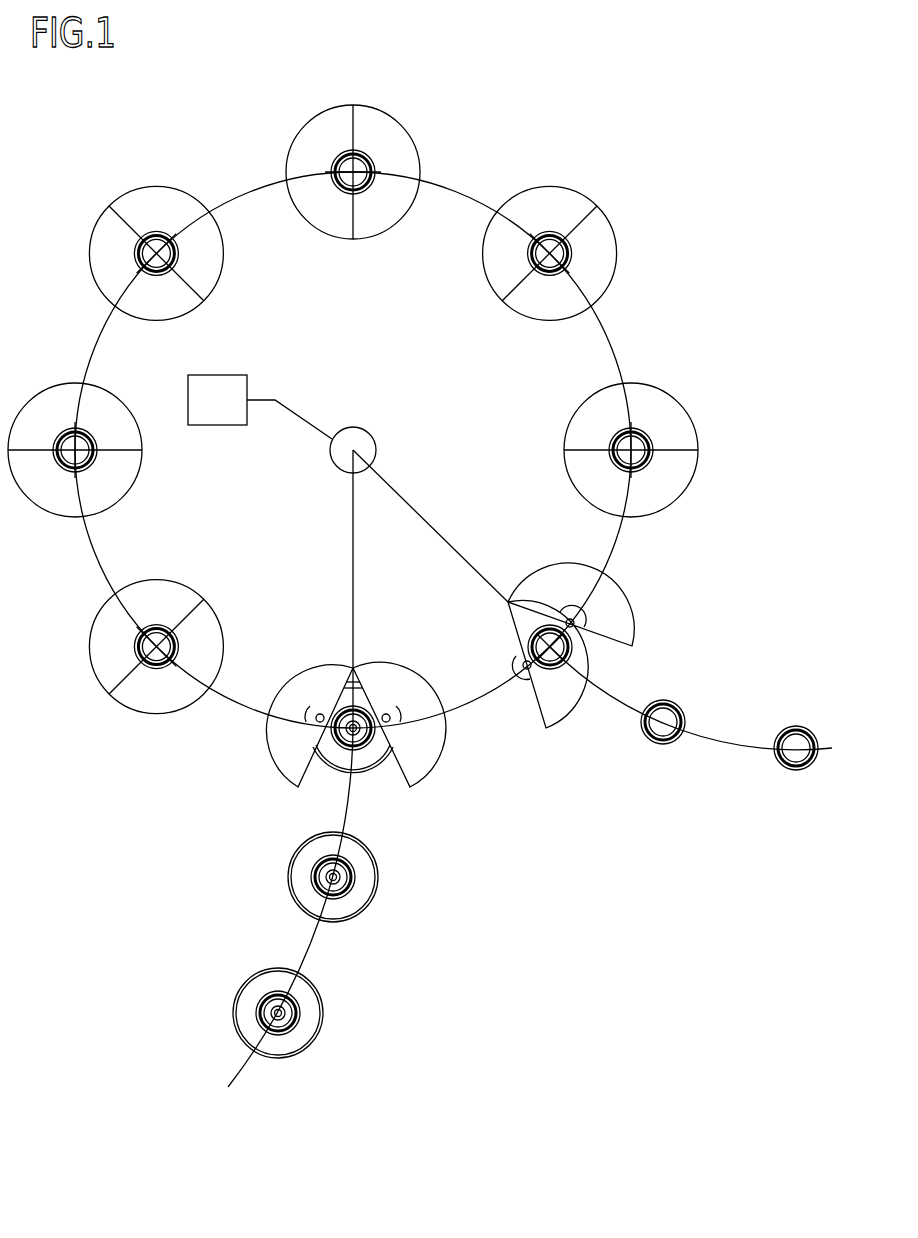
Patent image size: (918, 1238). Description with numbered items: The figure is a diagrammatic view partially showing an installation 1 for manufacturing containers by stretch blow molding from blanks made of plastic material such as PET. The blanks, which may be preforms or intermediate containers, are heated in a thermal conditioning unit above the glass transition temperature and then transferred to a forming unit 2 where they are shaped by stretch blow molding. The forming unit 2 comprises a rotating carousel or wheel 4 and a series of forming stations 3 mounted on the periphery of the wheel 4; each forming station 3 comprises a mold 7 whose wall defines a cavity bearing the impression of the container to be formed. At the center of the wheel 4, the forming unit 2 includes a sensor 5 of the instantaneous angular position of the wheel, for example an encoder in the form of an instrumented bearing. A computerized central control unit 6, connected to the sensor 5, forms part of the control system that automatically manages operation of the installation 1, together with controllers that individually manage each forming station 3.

The installation 1 is at (508, 128).
The forming unit 2 is at (420, 578).
The forming station 3 is at (305, 122).
The rotating carousel or wheel 4 is at (615, 355).
The sensor of the instantaneous angular position of the wheel 5 is at (375, 435).
The computerized central control unit 6 is at (225, 375).
The mold 7 is at (388, 132).